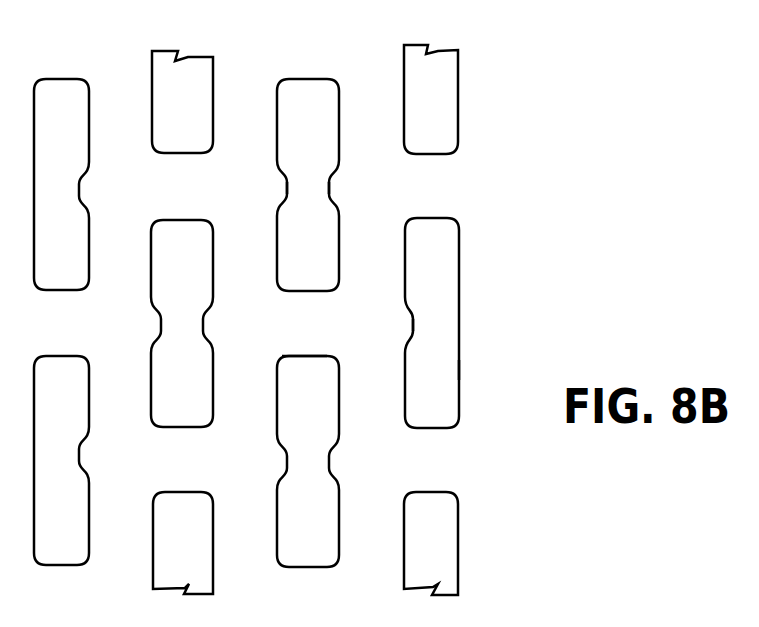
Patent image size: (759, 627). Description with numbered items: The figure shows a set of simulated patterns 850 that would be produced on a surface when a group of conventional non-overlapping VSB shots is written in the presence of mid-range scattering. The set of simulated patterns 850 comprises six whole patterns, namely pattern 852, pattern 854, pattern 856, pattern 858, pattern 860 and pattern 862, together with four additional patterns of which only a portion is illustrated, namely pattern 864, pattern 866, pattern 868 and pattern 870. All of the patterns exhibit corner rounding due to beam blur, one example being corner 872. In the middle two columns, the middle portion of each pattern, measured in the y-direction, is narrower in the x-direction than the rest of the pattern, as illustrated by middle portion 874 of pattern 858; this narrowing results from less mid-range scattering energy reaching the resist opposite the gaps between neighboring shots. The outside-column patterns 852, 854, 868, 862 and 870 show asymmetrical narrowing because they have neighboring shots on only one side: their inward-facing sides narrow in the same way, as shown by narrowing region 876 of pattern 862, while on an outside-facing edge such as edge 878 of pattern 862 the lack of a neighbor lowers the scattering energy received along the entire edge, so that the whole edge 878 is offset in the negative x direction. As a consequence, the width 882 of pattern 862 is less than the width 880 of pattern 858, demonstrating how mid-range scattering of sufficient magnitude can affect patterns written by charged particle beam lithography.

The set of simulated patterns 850 is at (627, 146).
The pattern 852 is at (89, 152).
The pattern 854 is at (89, 423).
The pattern 856 is at (213, 295).
The pattern 858 is at (322, 79).
The pattern 860 is at (339, 432).
The pattern 862 is at (459, 275).
The pattern 864 is at (213, 77).
The pattern 866 is at (213, 578).
The pattern 868 is at (460, 77).
The pattern 870 is at (459, 530).
The corner 872 is at (282, 356).
The middle portion 874 is at (287, 185).
The narrowing region 876 is at (413, 320).
The edge 878 is at (459, 370).
The width 880 is at (346, 252).
The width 882 is at (466, 397).